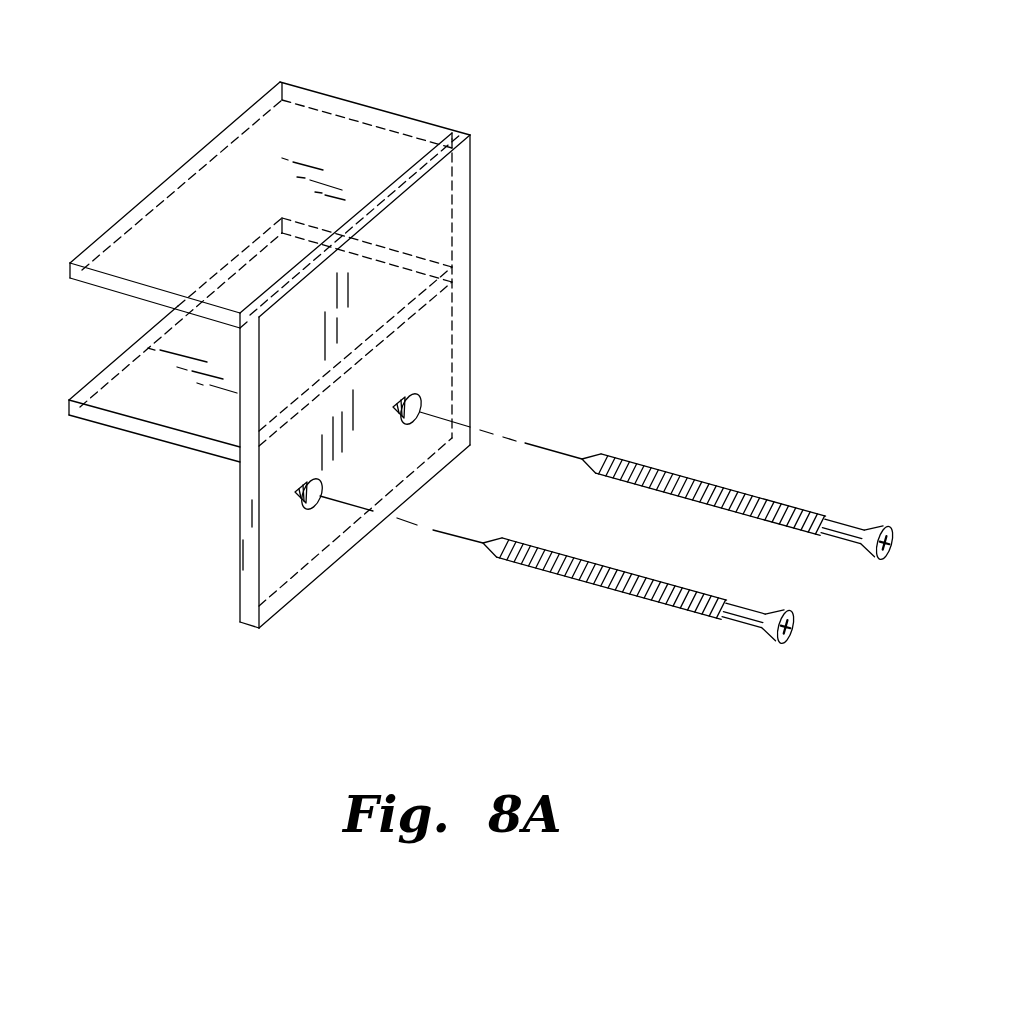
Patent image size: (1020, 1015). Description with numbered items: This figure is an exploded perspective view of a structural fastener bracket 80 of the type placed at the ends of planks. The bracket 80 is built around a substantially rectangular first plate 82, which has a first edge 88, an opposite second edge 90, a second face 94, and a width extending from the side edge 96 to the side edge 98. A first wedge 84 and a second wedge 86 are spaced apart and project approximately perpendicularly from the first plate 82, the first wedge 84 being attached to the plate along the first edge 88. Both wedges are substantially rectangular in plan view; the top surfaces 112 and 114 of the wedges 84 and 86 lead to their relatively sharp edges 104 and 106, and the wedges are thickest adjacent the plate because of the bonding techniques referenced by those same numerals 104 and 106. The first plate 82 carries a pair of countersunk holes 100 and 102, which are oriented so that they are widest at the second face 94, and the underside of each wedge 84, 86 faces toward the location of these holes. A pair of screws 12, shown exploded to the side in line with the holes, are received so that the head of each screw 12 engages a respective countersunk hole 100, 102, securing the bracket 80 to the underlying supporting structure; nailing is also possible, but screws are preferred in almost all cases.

The screws 12 is at (774, 522).
The structural fastener bracket 80 is at (538, 183).
The first plate 82 is at (431, 358).
The first wedge 84 is at (249, 150).
The second wedge 86 is at (148, 403).
The first edge 88 is at (412, 168).
The second edge 90 is at (346, 549).
The second face 94 is at (440, 233).
The side edge 96 is at (253, 506).
The side edge 98 is at (472, 298).
The countersunk hole 100 is at (317, 506).
The countersunk hole 102 is at (424, 407).
The sharp edge 104 is at (150, 190).
The sharp edge 106 is at (92, 379).
The top surface 112 is at (338, 118).
The top surface 114 is at (152, 360).